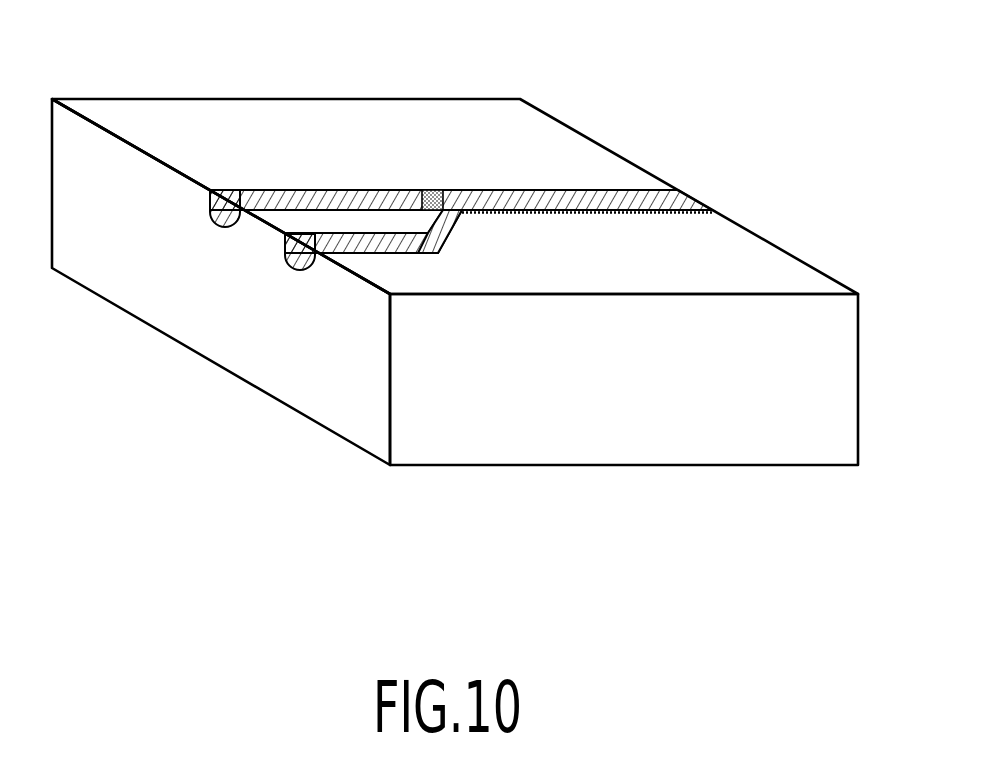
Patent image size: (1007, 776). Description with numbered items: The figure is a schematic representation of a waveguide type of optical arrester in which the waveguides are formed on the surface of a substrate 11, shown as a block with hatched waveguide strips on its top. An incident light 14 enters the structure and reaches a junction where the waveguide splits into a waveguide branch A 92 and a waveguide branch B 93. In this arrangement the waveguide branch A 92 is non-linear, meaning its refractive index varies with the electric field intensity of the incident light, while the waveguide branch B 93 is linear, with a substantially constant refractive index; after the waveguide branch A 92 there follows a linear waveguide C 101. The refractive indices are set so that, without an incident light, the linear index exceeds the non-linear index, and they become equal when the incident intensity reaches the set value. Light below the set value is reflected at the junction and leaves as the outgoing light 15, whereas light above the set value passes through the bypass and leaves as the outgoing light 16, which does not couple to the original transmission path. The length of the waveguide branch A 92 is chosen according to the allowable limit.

The substrate 11 is at (633, 428).
The incident light 14 is at (541, 114).
The outgoing light 15 is at (283, 250).
The outgoing light 16 is at (208, 212).
The waveguide branch A 92 is at (443, 190).
The waveguide branch B 93 is at (380, 253).
The linear waveguide C 101 is at (360, 190).